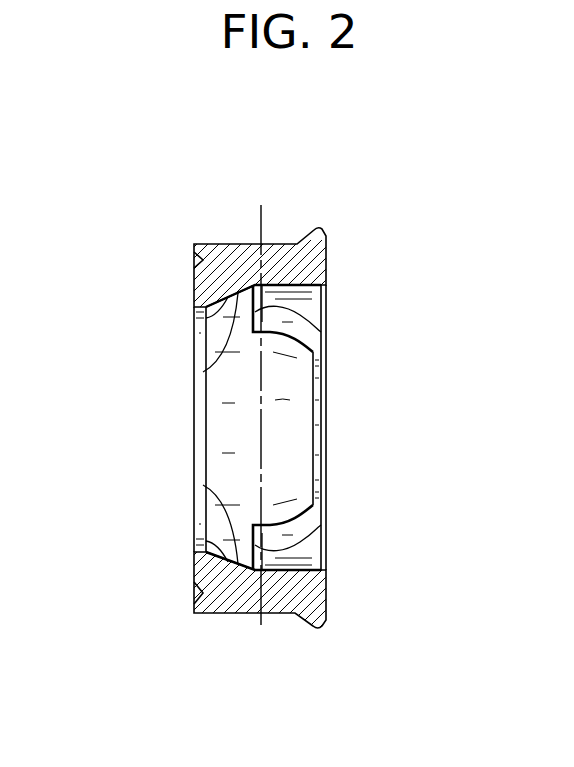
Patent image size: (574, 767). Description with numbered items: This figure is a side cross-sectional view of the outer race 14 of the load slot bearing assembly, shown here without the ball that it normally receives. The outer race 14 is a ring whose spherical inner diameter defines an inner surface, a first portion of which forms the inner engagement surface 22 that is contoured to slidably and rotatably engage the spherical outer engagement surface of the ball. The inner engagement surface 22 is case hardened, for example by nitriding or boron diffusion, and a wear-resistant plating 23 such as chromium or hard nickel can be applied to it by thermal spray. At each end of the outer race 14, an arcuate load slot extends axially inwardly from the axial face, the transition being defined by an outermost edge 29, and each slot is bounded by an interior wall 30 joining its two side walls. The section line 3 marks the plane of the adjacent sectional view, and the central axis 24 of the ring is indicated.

The outer race 14 is at (155, 260).
The inner engagement surface 22 is at (213, 327).
The wear-resistant plating 23 is at (226, 357).
The central axis 24 is at (258, 634).
The outermost edge 29 is at (325, 283).
The interior wall 30 is at (323, 332).
The section line 3- 3 is at (393, 168).